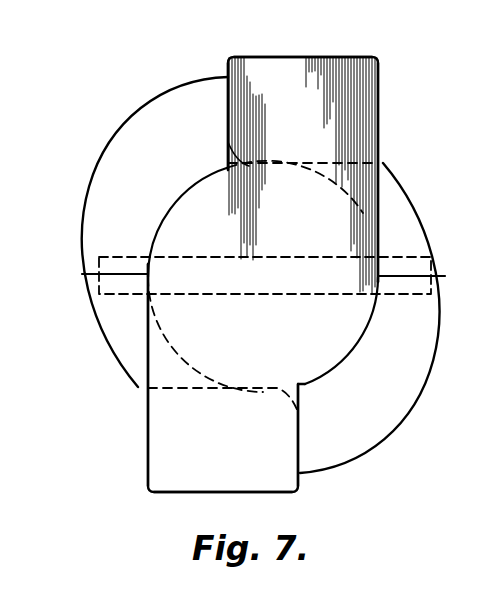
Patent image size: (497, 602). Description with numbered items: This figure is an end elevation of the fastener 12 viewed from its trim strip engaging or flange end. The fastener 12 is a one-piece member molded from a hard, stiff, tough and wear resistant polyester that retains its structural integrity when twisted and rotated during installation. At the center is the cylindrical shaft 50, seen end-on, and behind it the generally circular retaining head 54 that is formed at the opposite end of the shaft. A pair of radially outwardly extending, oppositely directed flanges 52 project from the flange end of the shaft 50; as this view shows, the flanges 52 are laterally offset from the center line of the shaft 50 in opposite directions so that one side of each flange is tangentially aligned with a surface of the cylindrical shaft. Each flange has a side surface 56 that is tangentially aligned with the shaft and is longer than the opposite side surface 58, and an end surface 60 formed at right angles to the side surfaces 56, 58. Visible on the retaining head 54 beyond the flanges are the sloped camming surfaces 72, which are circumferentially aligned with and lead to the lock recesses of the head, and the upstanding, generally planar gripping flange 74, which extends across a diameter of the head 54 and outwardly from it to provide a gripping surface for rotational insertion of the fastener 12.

The fastener 12 is at (270, 281).
The cylindrical shaft 50 is at (365, 338).
The flanges 52 is at (367, 82).
The retaining head 54 is at (410, 213).
The side surface 56 is at (383, 140).
The side surface 58 is at (227, 107).
The end surface 60 is at (302, 58).
The camming surfaces 72 is at (160, 127).
The gripping flange 74 is at (408, 257).